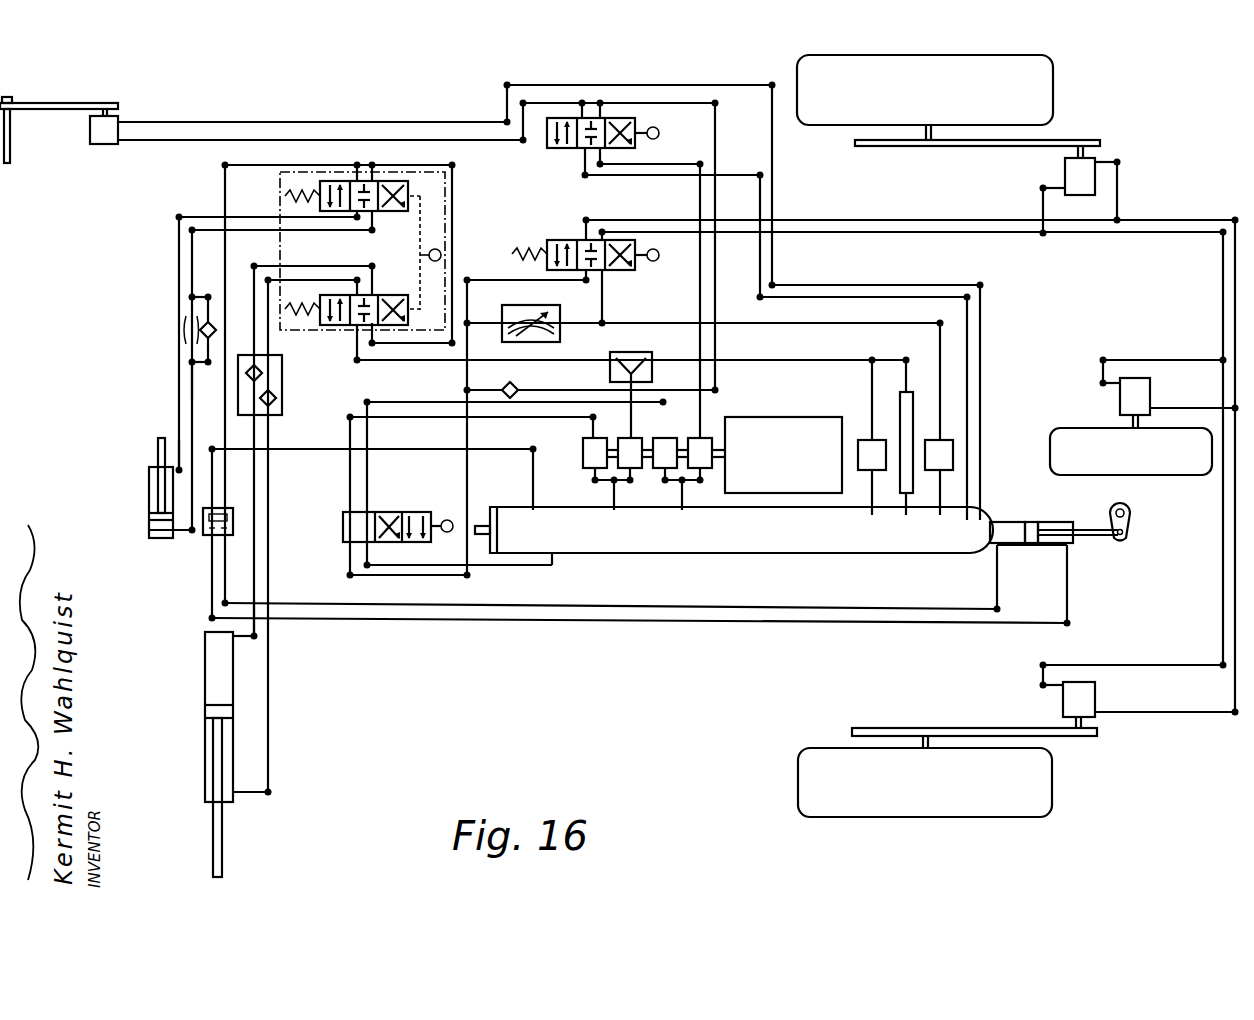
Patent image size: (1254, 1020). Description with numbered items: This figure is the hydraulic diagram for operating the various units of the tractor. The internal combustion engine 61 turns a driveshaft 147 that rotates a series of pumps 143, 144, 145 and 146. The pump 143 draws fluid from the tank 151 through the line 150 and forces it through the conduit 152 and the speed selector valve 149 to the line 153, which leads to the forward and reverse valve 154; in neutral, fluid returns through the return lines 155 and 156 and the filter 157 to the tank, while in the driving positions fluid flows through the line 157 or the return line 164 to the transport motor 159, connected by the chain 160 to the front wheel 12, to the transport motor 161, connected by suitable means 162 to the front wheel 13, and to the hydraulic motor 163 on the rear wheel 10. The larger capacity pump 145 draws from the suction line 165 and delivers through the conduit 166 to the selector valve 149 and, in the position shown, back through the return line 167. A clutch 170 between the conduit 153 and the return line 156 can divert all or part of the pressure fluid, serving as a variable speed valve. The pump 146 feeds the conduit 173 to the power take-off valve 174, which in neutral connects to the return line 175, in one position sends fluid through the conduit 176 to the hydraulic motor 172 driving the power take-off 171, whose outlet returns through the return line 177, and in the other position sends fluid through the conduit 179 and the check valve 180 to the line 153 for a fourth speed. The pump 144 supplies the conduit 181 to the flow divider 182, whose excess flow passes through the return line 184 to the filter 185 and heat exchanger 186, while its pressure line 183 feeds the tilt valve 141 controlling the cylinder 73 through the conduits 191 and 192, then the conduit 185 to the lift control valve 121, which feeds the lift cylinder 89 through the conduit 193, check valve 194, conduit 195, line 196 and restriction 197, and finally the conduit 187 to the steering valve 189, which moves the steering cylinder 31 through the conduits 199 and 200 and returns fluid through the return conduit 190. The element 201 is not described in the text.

The rear wheel 10 is at (1131, 476).
The front wheel 12 is at (1040, 94).
The front wheel 13 is at (1030, 786).
The hydraulic cylinder 31 is at (1014, 525).
The internal combustion engine 61 is at (783, 455).
The cylinder 73 is at (222, 690).
The hydraulic cylinder 89 is at (149, 491).
The lift control valve 121 is at (333, 180).
The tilt valve 141 is at (420, 285).
The pump 143 is at (585, 458).
The pump 144 is at (634, 462).
The pump 145 is at (680, 468).
The pump 146 is at (706, 462).
The driveshaft 147 is at (716, 448).
The speed selector valve 149 is at (343, 524).
The line 150 is at (611, 490).
The tank 151 is at (734, 435).
The conduit 152 is at (357, 413).
The line 153 is at (466, 434).
The forward and reverse valve 154 is at (568, 240).
The return line 155 is at (604, 300).
The return line 156 is at (704, 418).
The filter 157 is at (936, 220).
The transport motor 159 is at (1098, 178).
The chain 160 is at (1223, 288).
The transport motor 161 is at (1062, 696).
The suitable means 162 is at (955, 728).
The hydraulic motor 163 is at (1136, 380).
The return line 164 is at (1222, 626).
The suction line 165 is at (684, 500).
The conduit 166 is at (593, 402).
The return line 167 is at (458, 574).
The clutch 170 is at (524, 305).
The power take-off 171 is at (44, 103).
The hydraulic motor 172 is at (112, 140).
The conduit 173 is at (702, 272).
The power take-off valve 174 is at (597, 118).
The return line 175 is at (598, 180).
The conduit 176 is at (481, 140).
The return line 177 is at (403, 122).
The conduit 179 is at (745, 158).
The check valve 180 is at (503, 387).
The conduit 181 is at (627, 420).
The flow divider 182 is at (645, 352).
The pressure line 183 is at (376, 361).
The return line 184 is at (633, 436).
The filter 185 is at (453, 234).
The heat exchanger 186 is at (905, 418).
The conduit 187 is at (225, 398).
The steering valve 189 is at (204, 531).
The return conduit 190 is at (373, 532).
The conduit 191 is at (262, 432).
The conduit 192 is at (255, 566).
The conduit 193 is at (250, 230).
The check valve 194 is at (217, 342).
The conduit 195 is at (190, 376).
The line 196 is at (178, 253).
The restriction 197 is at (188, 330).
The conduit 199 is at (611, 630).
The conduit 200 is at (640, 639).
The conduit 201 is at (137, 446).